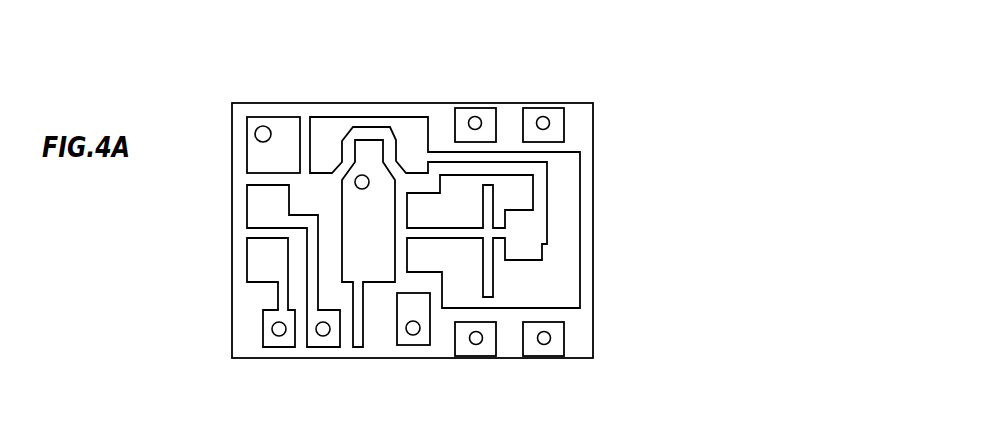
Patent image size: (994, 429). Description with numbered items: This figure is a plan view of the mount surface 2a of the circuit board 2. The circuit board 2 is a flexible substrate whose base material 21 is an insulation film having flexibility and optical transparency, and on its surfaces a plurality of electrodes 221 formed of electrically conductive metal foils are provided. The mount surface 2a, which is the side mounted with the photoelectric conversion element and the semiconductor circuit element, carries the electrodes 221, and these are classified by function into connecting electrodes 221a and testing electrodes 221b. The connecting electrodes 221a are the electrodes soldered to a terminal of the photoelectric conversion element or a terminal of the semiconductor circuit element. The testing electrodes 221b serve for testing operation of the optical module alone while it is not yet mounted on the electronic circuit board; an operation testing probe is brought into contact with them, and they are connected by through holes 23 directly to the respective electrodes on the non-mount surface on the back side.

The circuit board 2 is at (235, 67).
The mount surface 2a is at (635, 198).
The base material 21 is at (444, 122).
The electrodes 221 is at (391, 231).
The connecting electrodes 221a is at (350, 197).
The testing electrodes 221b is at (485, 117).
The through holes 23 is at (362, 189).